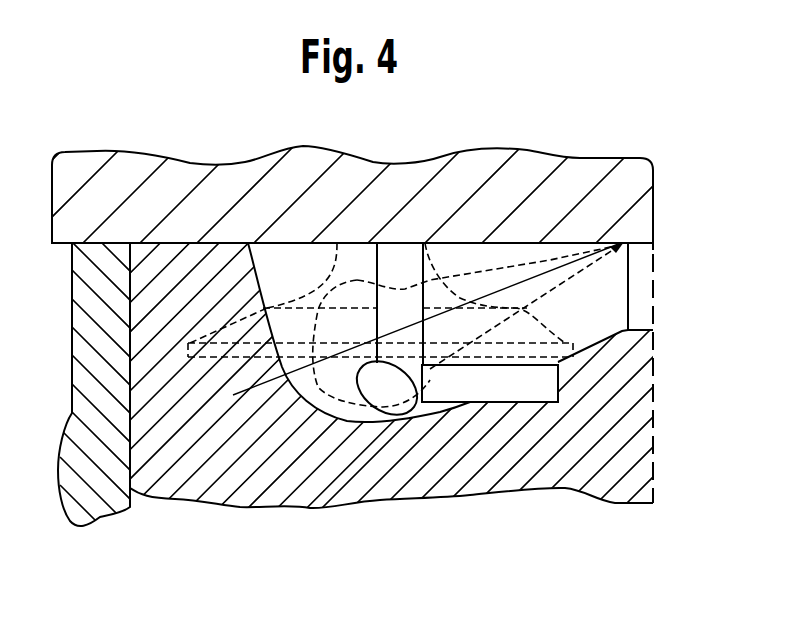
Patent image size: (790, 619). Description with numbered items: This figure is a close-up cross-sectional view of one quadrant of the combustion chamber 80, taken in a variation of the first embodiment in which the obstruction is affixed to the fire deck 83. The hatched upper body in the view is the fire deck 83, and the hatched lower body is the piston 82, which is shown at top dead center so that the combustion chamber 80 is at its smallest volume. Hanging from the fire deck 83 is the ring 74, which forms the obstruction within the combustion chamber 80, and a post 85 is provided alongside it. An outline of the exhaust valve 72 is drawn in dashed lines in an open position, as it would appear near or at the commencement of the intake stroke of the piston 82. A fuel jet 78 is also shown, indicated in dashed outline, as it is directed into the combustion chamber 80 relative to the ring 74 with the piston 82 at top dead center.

The exhaust valve 72 is at (357, 262).
The ring 74 is at (535, 366).
The fuel jet 78 is at (312, 392).
The combustion chamber 80 is at (600, 320).
The piston 82 is at (323, 463).
The fire deck 83 is at (521, 242).
The post 85 is at (428, 403).